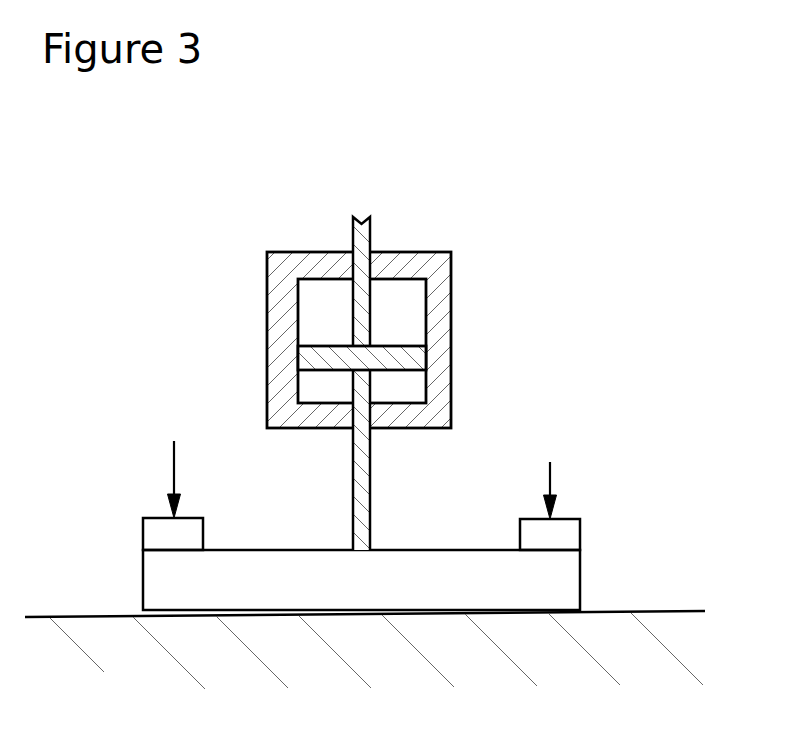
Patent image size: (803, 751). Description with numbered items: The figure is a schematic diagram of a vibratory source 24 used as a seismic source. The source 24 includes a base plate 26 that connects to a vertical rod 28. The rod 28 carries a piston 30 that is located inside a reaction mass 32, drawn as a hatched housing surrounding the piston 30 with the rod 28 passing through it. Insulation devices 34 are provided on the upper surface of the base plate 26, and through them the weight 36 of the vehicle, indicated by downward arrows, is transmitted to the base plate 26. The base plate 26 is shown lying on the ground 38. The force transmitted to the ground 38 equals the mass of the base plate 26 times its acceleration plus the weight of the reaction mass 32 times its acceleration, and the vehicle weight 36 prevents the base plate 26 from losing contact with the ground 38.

The vibratory source 24 is at (378, 163).
The base plate 26 is at (565, 567).
The rod 28 is at (361, 233).
The piston 30 is at (392, 355).
The reaction mass 32 is at (437, 313).
The insulation devices 34 is at (557, 535).
The weight 36 is at (173, 475).
The ground 38 is at (350, 677).